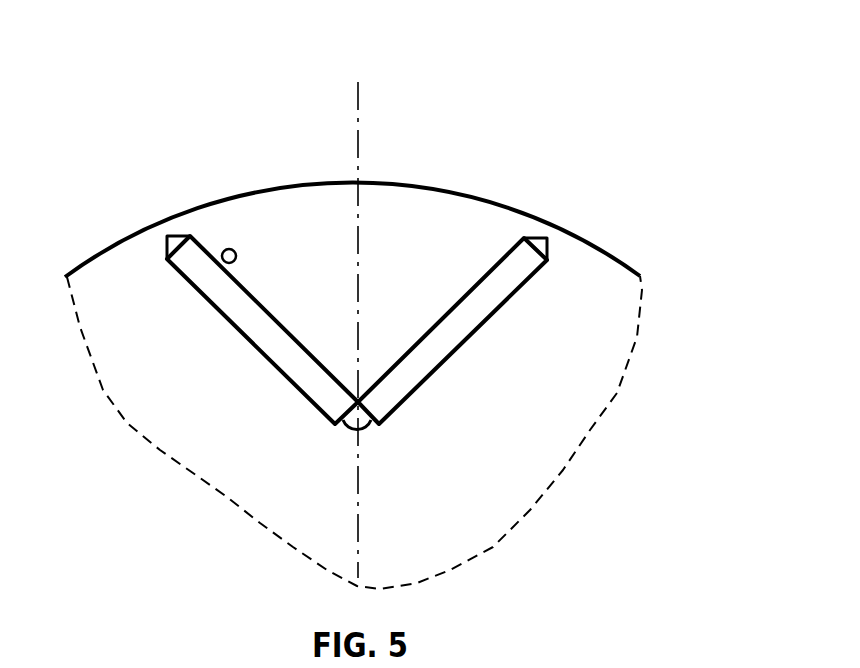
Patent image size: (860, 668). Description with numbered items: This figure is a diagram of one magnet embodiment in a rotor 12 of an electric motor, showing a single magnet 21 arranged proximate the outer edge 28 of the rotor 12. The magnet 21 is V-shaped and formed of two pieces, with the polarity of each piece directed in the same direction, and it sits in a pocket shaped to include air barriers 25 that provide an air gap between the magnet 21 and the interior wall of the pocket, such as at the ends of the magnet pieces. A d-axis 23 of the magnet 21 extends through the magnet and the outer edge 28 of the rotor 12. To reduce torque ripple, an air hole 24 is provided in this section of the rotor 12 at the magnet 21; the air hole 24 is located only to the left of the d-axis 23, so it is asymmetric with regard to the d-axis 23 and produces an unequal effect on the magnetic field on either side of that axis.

The rotor 12 is at (242, 448).
The magnet 21 is at (248, 303).
The d-axis 23 is at (357, 493).
The air hole 24 is at (227, 249).
The air barrier 25 is at (547, 260).
The outer edge 28 is at (482, 197).